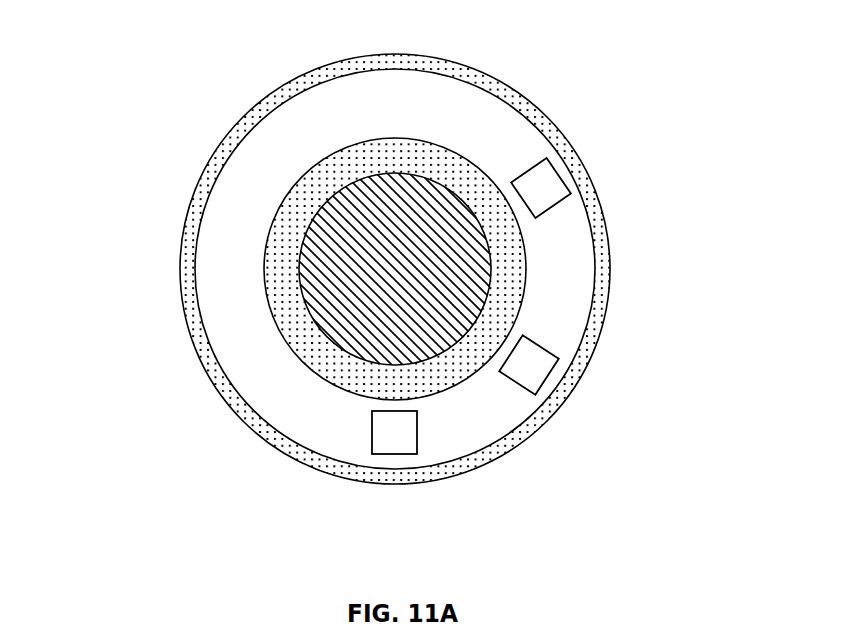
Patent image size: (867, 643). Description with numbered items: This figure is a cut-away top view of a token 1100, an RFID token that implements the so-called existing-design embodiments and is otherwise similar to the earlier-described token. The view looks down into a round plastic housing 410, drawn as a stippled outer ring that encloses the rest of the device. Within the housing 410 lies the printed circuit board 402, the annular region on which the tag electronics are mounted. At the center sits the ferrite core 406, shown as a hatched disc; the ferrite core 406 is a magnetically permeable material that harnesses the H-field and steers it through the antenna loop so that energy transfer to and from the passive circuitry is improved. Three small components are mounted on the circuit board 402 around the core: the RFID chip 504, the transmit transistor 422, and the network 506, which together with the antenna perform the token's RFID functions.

The token 1100 is at (677, 532).
The plastic housing 410 is at (530, 238).
The printed circuit board 402 is at (593, 302).
The ferrite core 406 is at (302, 292).
The RFID chip 504 is at (525, 167).
The transmit transistor 422 is at (552, 374).
The network 506 is at (371, 438).